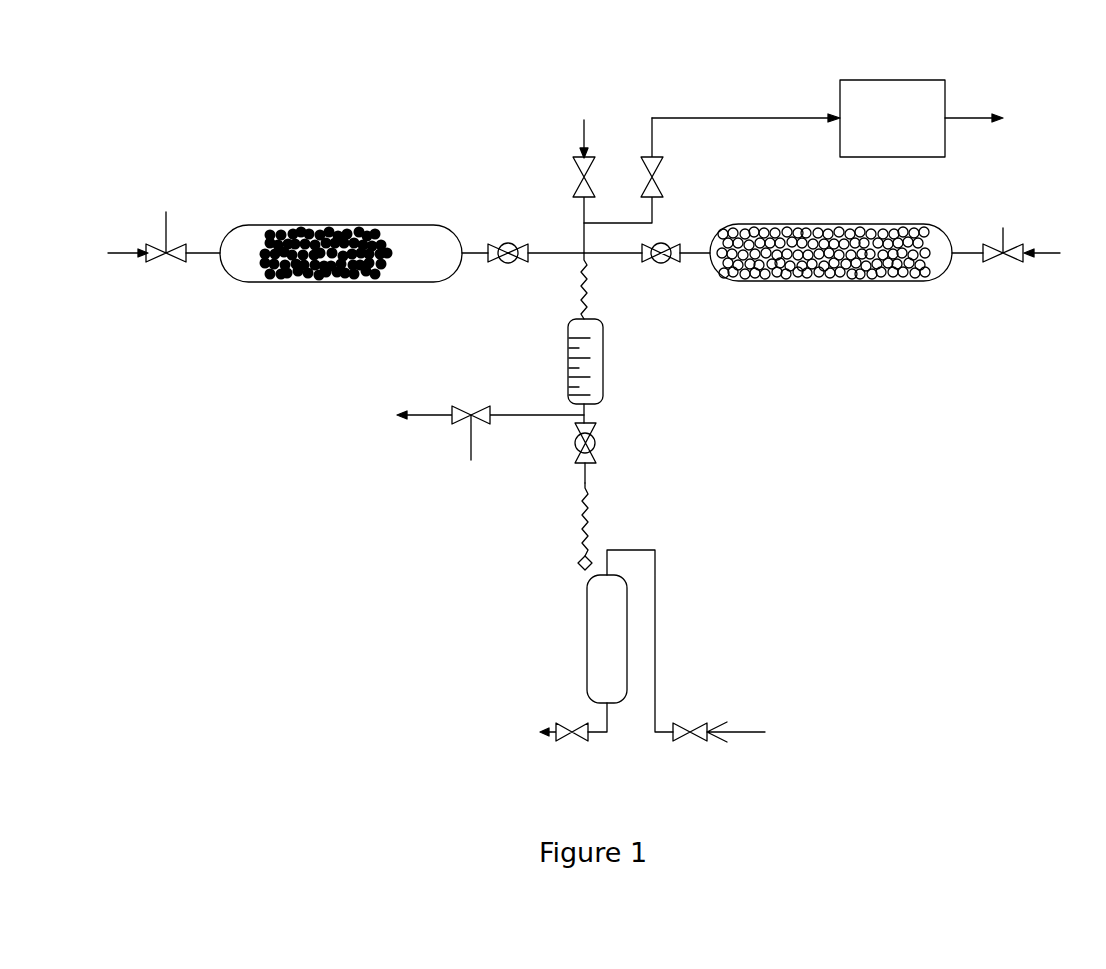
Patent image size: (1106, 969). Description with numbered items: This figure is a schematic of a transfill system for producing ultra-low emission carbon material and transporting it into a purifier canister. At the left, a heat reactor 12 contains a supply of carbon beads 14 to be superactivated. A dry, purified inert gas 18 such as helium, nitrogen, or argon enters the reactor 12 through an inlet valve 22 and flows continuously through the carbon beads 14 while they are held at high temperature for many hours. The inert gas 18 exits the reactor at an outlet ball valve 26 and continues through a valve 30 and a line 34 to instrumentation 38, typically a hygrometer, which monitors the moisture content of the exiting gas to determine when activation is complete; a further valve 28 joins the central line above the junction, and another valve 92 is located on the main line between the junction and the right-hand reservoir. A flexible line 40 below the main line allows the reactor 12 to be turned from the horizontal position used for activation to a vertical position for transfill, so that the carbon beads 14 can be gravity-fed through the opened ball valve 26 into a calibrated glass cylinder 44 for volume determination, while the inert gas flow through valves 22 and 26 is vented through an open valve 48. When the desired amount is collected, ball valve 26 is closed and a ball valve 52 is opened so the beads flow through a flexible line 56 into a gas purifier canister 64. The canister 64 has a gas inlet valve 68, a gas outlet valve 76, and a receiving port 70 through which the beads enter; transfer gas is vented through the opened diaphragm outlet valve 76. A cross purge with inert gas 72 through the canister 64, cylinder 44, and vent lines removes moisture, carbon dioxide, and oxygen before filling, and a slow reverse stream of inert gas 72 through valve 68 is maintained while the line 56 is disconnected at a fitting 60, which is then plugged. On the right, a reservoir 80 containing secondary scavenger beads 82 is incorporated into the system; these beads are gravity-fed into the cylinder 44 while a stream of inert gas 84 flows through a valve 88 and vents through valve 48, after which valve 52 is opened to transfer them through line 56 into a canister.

The heat reactor 12 is at (252, 283).
The carbon beads 14 is at (268, 245).
The inert gas 18 is at (108, 254).
The inlet valve 22 is at (166, 222).
The outlet ball valve 26 is at (505, 242).
The valve 28 is at (582, 175).
The valve 30 is at (653, 173).
The line 34 is at (713, 118).
The instrumentation 38 is at (882, 83).
The flexible line 40 is at (580, 282).
The calibrated glass cylinder 44 is at (603, 385).
The valve 48 is at (490, 449).
The ball valve 52 is at (596, 446).
The flexible line 56 is at (580, 517).
The fitting 60 is at (576, 564).
The gas purifier canister 64 is at (627, 640).
The gas inlet valve 68 is at (693, 742).
The receiving port 70 is at (590, 578).
The inert gas 72 is at (756, 736).
The gas outlet valve 76 is at (572, 738).
The reservoir 80 is at (933, 277).
The secondary scavenger beads 82 is at (808, 257).
The inert gas 84 is at (1058, 254).
The valve 88 is at (1003, 230).
The valve 92 is at (661, 263).